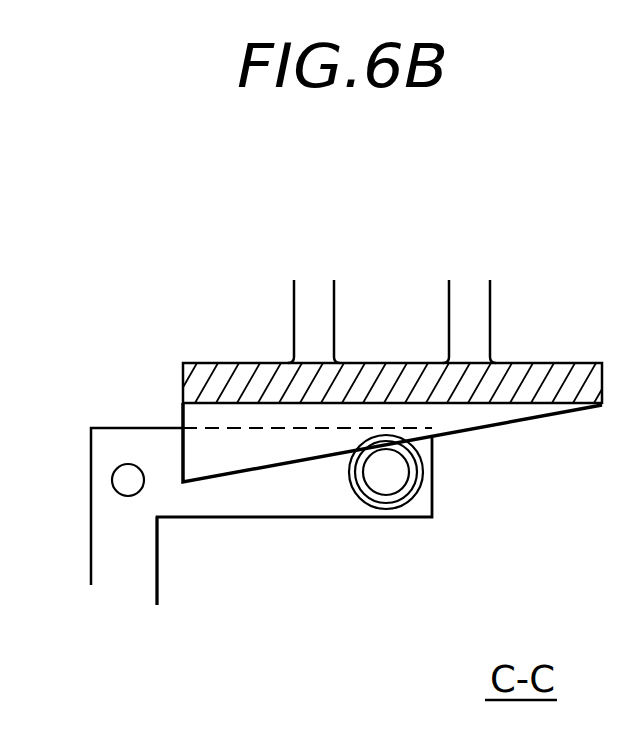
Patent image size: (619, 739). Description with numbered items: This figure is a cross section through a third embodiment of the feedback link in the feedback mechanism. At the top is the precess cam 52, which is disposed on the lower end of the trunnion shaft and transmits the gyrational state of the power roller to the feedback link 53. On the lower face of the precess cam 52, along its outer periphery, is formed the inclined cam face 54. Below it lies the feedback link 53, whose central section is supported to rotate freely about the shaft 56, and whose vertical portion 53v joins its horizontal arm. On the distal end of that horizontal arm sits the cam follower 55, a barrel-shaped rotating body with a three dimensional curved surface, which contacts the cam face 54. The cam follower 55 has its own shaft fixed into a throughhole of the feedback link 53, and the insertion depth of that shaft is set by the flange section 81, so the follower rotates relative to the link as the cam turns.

The precess cam 52 is at (545, 366).
The feedback link 53 is at (319, 520).
The bracket vertical portion 53v is at (157, 583).
The cam face 54 is at (495, 427).
The cam follower 55 is at (400, 468).
The shaft 56 is at (128, 483).
The flange section 81 is at (413, 488).